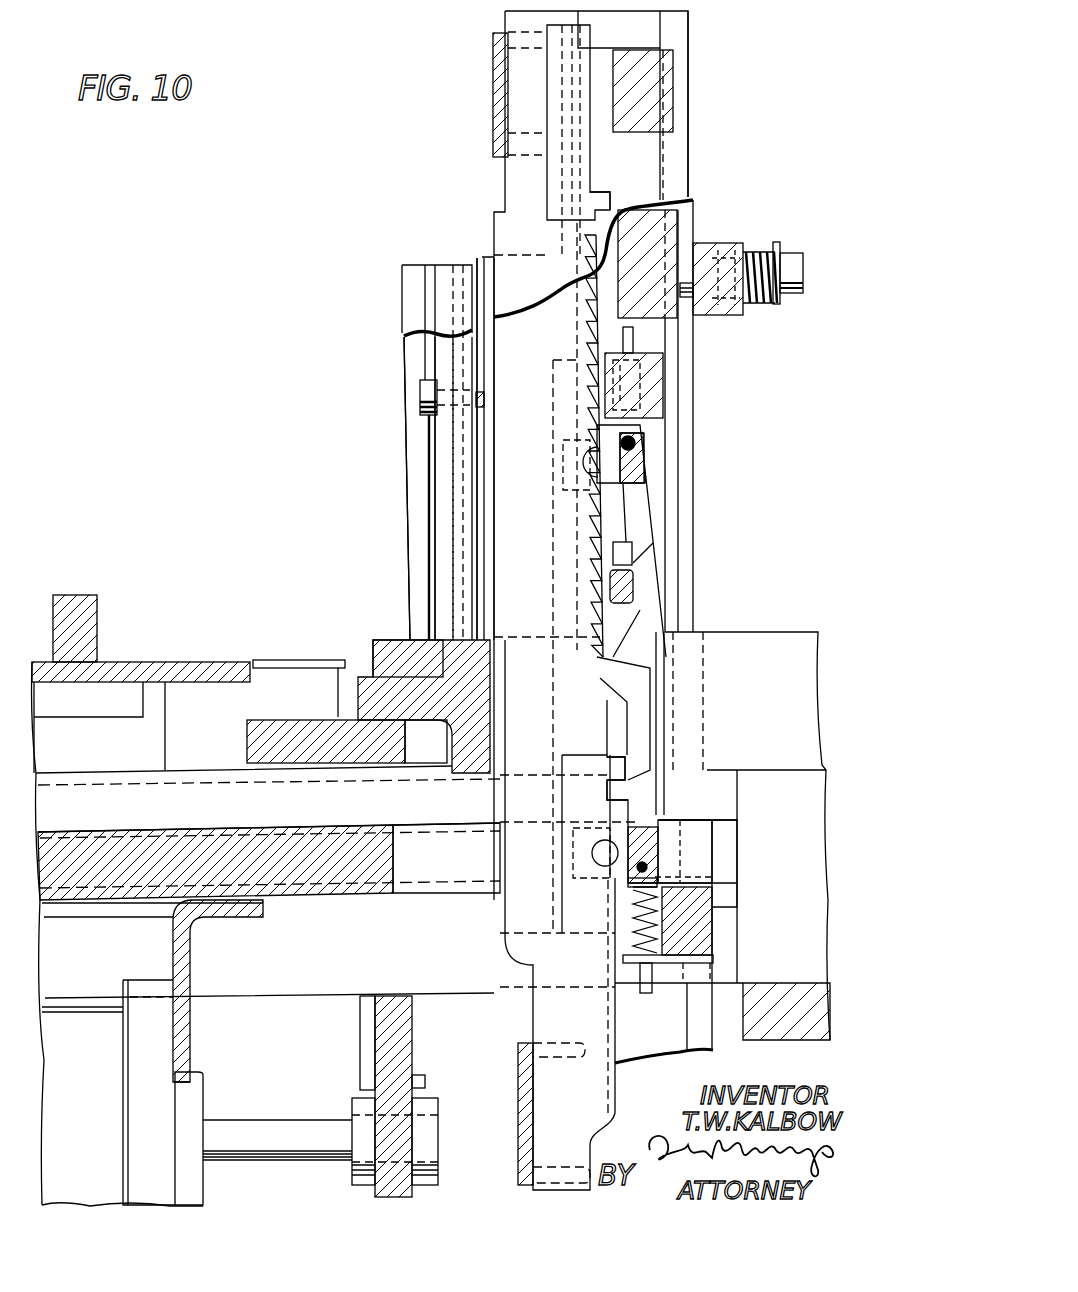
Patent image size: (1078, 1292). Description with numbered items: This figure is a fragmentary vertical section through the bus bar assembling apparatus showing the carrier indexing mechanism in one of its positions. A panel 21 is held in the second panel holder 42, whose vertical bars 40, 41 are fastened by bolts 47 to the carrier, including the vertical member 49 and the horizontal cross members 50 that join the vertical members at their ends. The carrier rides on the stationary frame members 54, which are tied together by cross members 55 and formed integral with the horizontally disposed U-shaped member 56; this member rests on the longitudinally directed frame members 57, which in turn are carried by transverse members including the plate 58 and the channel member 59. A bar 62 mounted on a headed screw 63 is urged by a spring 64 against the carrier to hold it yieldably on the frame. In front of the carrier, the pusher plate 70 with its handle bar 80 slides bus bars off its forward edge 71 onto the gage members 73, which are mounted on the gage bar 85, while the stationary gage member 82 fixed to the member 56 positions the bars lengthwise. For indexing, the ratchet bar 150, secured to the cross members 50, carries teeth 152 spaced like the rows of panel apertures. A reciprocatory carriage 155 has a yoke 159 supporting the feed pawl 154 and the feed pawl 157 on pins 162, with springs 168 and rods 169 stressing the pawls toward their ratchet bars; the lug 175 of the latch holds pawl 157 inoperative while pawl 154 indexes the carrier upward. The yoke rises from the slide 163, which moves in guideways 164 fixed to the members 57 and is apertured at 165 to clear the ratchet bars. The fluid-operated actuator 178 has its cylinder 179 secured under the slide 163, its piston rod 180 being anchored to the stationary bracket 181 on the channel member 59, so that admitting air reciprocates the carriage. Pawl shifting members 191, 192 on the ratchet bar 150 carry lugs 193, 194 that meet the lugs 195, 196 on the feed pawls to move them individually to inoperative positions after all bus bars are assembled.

The panel 21 is at (452, 480).
The vertical bar 40 is at (415, 430).
The vertical bar 41 is at (445, 547).
The second panel holder 42 is at (398, 305).
The bolts 47 is at (425, 400).
The vertical member 49 is at (488, 460).
The horizontal cross members 50 is at (500, 70).
The stationary frame members 54 is at (660, 182).
The cross members 55 is at (650, 85).
The U-shaped member 56 is at (435, 690).
The frame members 57 is at (757, 790).
The plate 58 is at (778, 1000).
The channel member 59 is at (360, 1040).
The bars 62 is at (722, 245).
The headed screws 63 is at (690, 297).
The springs 64 is at (765, 300).
The pusher plate 70 is at (170, 665).
The forward edge 71 is at (350, 660).
The gage members 73 is at (343, 693).
The handle bar 80 is at (90, 605).
The stationary gage member 82 is at (392, 652).
The gage bar 85 is at (270, 735).
The ratchet bar 150 is at (512, 248).
The teeth 152 is at (592, 322).
The feed pawl 154 is at (645, 805).
The reciprocatory carriage 155 is at (703, 850).
The feed pawl 157 is at (640, 505).
The yoke 159 is at (630, 410).
The pins 162 is at (578, 478).
The slide 163 is at (342, 872).
The guideways 164 is at (723, 867).
The aperture 165 is at (430, 875).
The springs 168 is at (640, 385).
The rods 169 is at (632, 340).
The lug 175 is at (633, 580).
The fluid-operated actuator 178 is at (138, 1055).
The cylinder 179 is at (158, 1175).
The piston rod 180 is at (292, 1130).
The stationary bracket 181 is at (395, 1060).
The pawl shifting member 191 is at (585, 752).
The pawl shifting member 192 is at (555, 190).
The lug 193 is at (612, 790).
The lug 194 is at (612, 200).
The lug 195 is at (605, 765).
The lug 196 is at (613, 565).